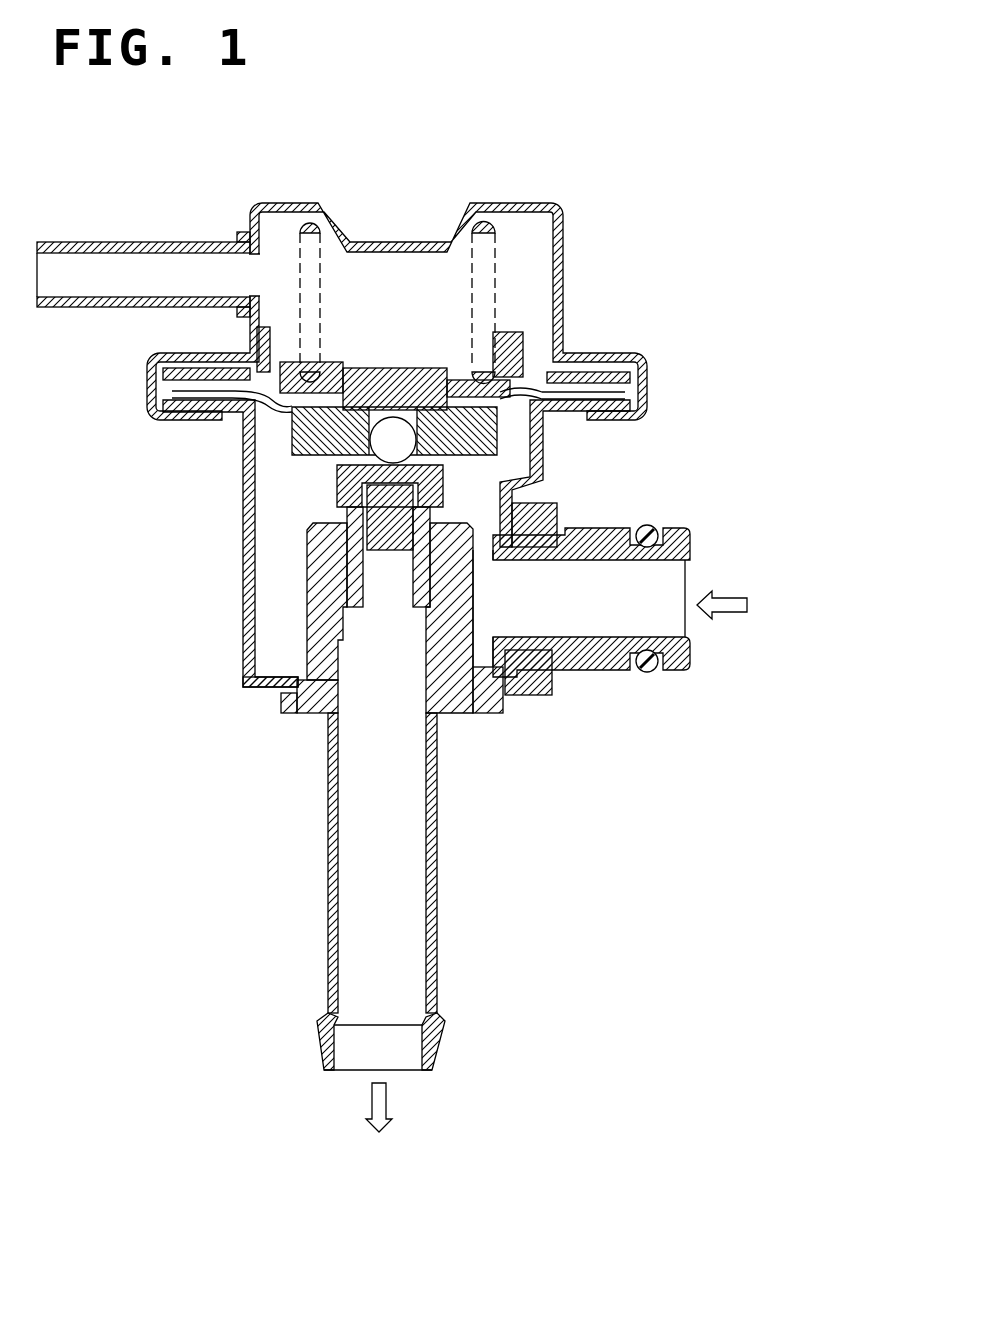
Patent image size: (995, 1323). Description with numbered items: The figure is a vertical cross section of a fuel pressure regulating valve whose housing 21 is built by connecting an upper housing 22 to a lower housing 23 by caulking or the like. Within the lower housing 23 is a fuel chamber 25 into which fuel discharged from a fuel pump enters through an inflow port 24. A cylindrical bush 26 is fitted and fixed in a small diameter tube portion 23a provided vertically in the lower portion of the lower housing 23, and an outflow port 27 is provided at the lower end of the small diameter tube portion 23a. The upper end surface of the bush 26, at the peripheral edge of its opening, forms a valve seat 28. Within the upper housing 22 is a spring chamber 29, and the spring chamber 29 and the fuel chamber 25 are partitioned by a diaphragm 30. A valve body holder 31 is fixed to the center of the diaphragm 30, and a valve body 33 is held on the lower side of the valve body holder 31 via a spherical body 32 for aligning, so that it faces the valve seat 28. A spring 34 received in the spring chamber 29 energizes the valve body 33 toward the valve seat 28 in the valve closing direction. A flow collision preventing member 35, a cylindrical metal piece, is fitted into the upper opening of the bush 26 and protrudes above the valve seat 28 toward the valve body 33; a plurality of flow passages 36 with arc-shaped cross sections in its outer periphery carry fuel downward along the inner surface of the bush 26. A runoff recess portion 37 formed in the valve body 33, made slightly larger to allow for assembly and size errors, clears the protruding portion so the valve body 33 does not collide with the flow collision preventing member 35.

The housing 21 is at (577, 330).
The upper housing 22 is at (563, 278).
The lower housing 23 is at (243, 617).
The small diameter tube portion 23a is at (262, 688).
The inflow port 24 is at (655, 595).
The fuel chamber 25 is at (480, 482).
The cylindrical bush 26 is at (423, 575).
The outflow port 27 is at (388, 1060).
The valve seat 28 is at (368, 500).
The spring chamber 29 is at (403, 273).
The diaphragm 30 is at (530, 372).
The valve body holder 31 is at (393, 368).
The spherical body 32 is at (388, 443).
The valve body 33 is at (447, 468).
The spring 34 is at (495, 250).
The flow collision preventing member 35 is at (447, 527).
The flow passages 36 is at (408, 488).
The runoff recess portion 37 is at (356, 520).